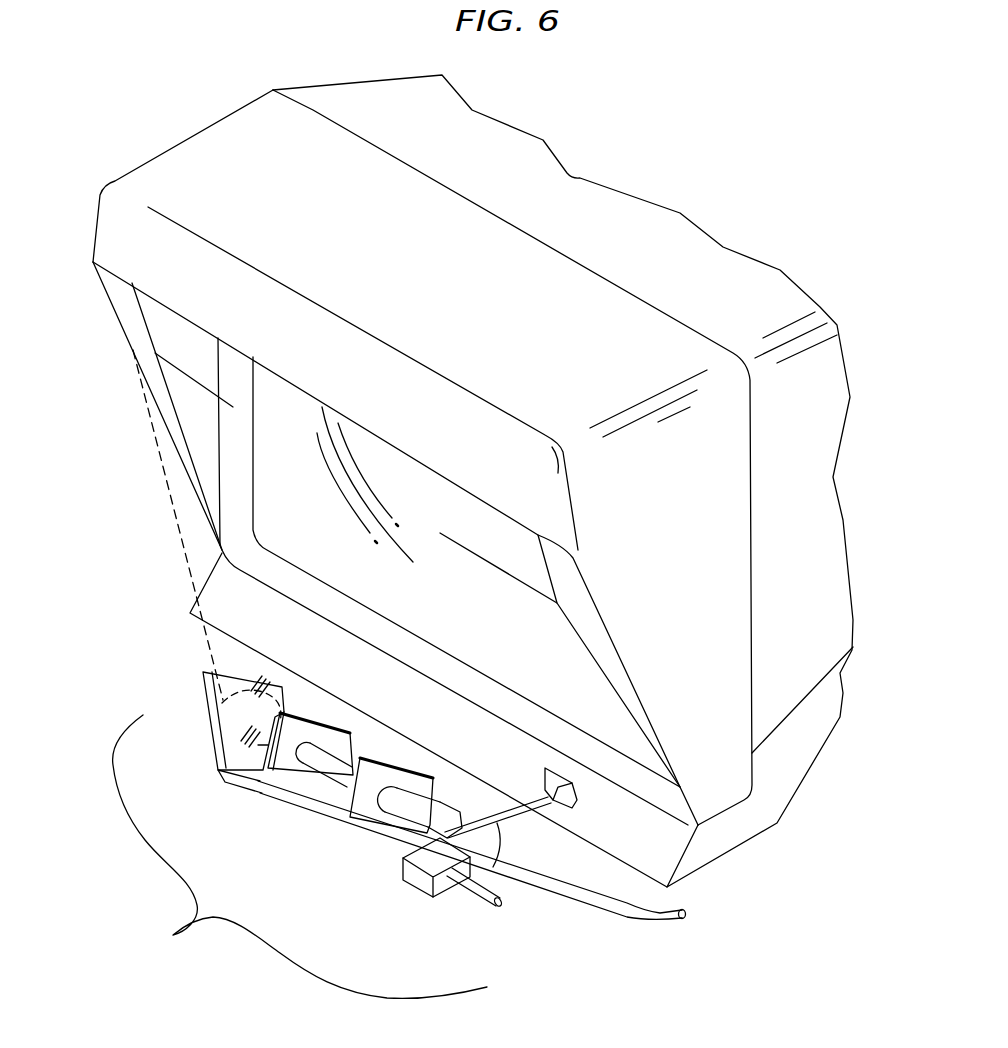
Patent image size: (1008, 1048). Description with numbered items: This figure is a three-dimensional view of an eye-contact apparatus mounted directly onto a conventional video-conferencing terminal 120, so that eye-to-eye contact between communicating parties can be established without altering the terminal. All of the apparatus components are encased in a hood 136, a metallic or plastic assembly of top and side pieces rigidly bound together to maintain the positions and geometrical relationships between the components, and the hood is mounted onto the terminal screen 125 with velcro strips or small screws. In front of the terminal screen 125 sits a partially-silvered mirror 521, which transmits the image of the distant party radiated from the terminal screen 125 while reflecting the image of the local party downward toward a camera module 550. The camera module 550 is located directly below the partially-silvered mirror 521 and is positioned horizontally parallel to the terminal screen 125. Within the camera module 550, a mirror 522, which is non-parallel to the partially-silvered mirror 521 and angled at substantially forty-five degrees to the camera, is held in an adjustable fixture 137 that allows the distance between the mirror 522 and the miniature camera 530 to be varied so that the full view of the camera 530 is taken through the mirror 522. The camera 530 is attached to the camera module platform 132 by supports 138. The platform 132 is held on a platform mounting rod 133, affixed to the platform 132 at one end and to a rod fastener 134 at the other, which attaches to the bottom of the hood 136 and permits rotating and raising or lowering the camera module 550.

The video-conferencing terminal 120 is at (577, 178).
The hood 136 is at (195, 187).
The terminal screen 125 is at (340, 525).
The partially-silvered mirror 521 is at (227, 483).
The mirror 522 is at (207, 693).
The adjustable fixture 137 is at (233, 778).
The camera module platform 132 is at (307, 805).
The supports 138 is at (267, 783).
The miniature camera 530 is at (343, 777).
The platform mounting rod 133 is at (482, 888).
The rod fastener 134 is at (567, 800).
The camera module 550 is at (300, 856).